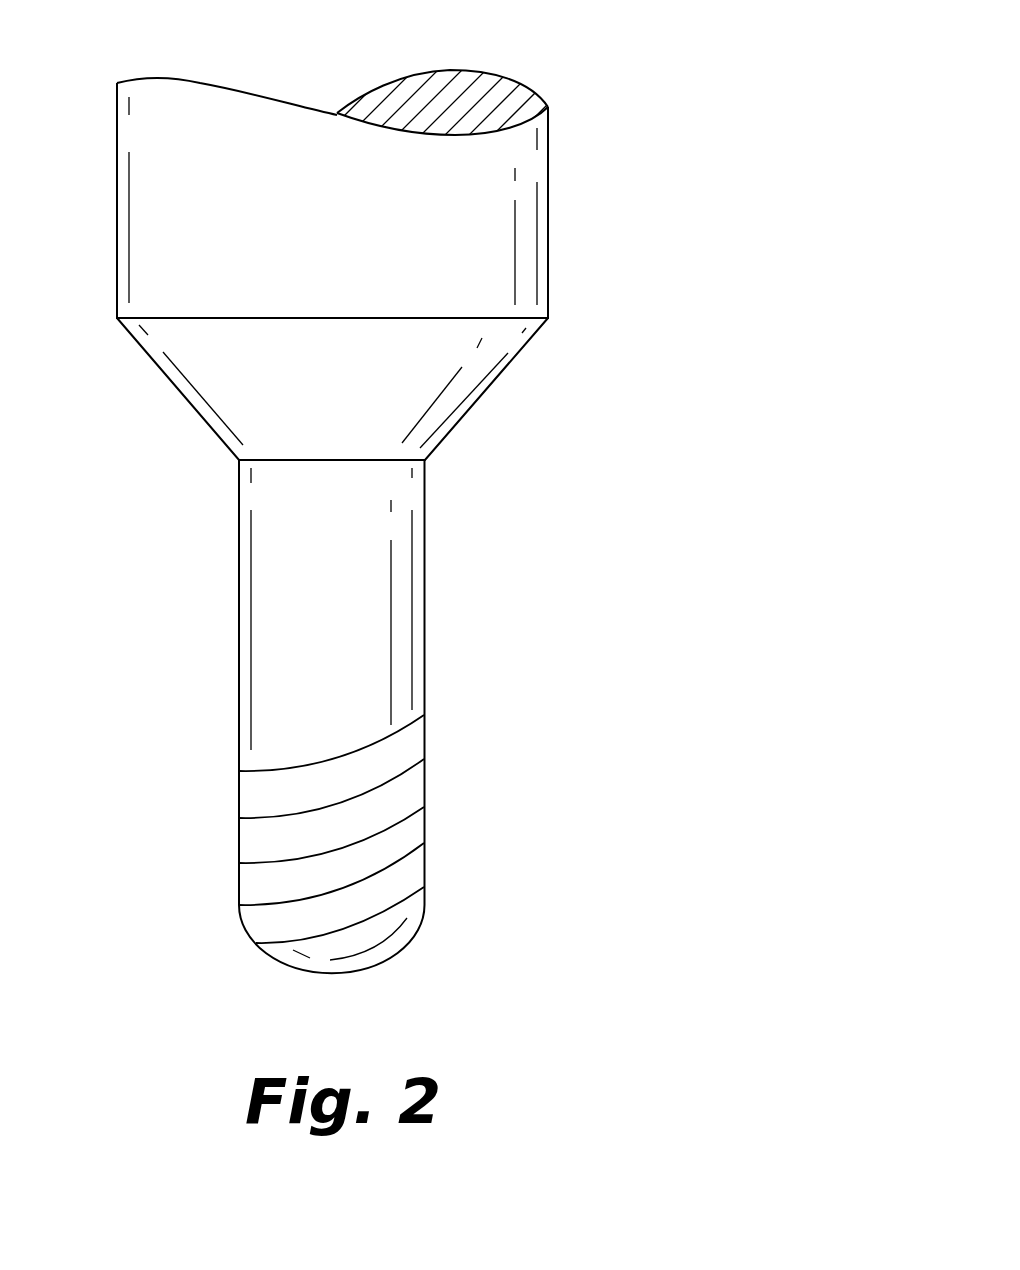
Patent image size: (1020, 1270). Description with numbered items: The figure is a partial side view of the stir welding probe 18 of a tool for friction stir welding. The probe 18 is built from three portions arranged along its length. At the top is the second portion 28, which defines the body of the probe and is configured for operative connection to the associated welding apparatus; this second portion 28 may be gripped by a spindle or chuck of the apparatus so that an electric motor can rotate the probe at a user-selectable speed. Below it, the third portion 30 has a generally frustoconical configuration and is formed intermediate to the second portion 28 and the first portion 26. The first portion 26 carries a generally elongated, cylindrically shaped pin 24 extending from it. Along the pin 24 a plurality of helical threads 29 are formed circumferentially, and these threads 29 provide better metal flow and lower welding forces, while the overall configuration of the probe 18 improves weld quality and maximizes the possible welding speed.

The stir welding probe 18 is at (434, 530).
The pin 24 is at (239, 797).
The first portion 26 is at (425, 582).
The second portion 28 is at (550, 130).
The helical threads 29 is at (248, 930).
The third portion 30 is at (497, 383).